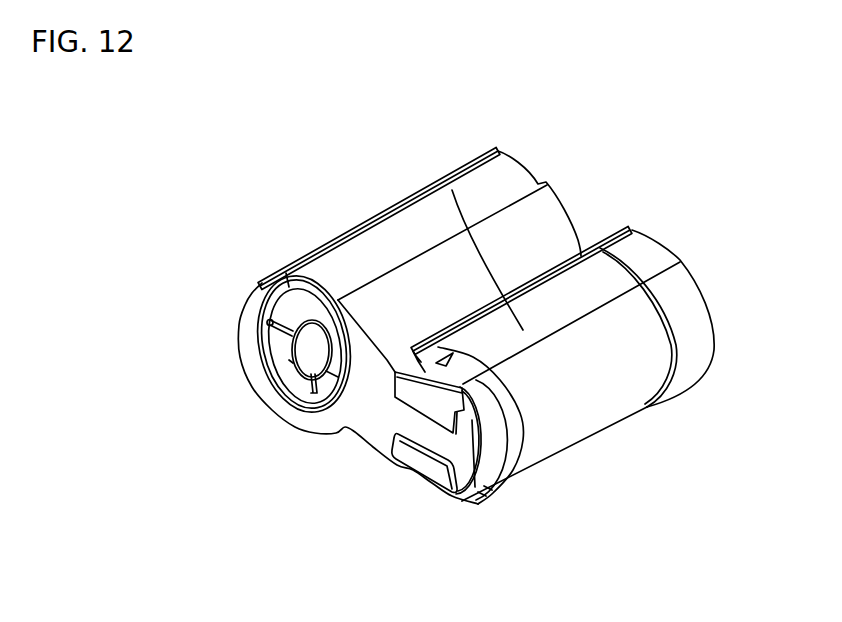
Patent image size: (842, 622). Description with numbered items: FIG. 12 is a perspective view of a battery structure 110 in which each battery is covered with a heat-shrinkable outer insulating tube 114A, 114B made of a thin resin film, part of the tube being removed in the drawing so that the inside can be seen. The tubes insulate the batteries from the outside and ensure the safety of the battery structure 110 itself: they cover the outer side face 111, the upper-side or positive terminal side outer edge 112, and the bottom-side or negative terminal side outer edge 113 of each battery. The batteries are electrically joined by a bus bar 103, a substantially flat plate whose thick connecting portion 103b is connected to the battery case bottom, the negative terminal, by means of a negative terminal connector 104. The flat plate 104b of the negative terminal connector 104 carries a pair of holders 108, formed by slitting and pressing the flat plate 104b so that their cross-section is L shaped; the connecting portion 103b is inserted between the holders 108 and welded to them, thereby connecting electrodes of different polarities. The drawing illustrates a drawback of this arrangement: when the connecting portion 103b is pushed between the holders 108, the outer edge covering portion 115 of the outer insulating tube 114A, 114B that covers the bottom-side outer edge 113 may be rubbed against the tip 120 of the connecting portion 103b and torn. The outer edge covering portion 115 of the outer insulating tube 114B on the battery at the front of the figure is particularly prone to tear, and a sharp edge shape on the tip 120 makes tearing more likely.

The battery structure 110 is at (674, 142).
The bus bar 103 is at (351, 438).
The connecting portion 103b is at (443, 443).
The negative terminal connector 104 is at (466, 363).
The flat plate 104b is at (488, 488).
The holders 108 is at (413, 397).
The outer side face 111 is at (415, 230).
The upper-side outer edge 112 is at (310, 283).
The bottom-side outer edge 113 is at (424, 356).
The outer insulating tube 114A is at (513, 245).
The outer insulating tube 114B is at (612, 378).
The outer edge covering portion 115 is at (500, 437).
The tip 120 is at (483, 495).